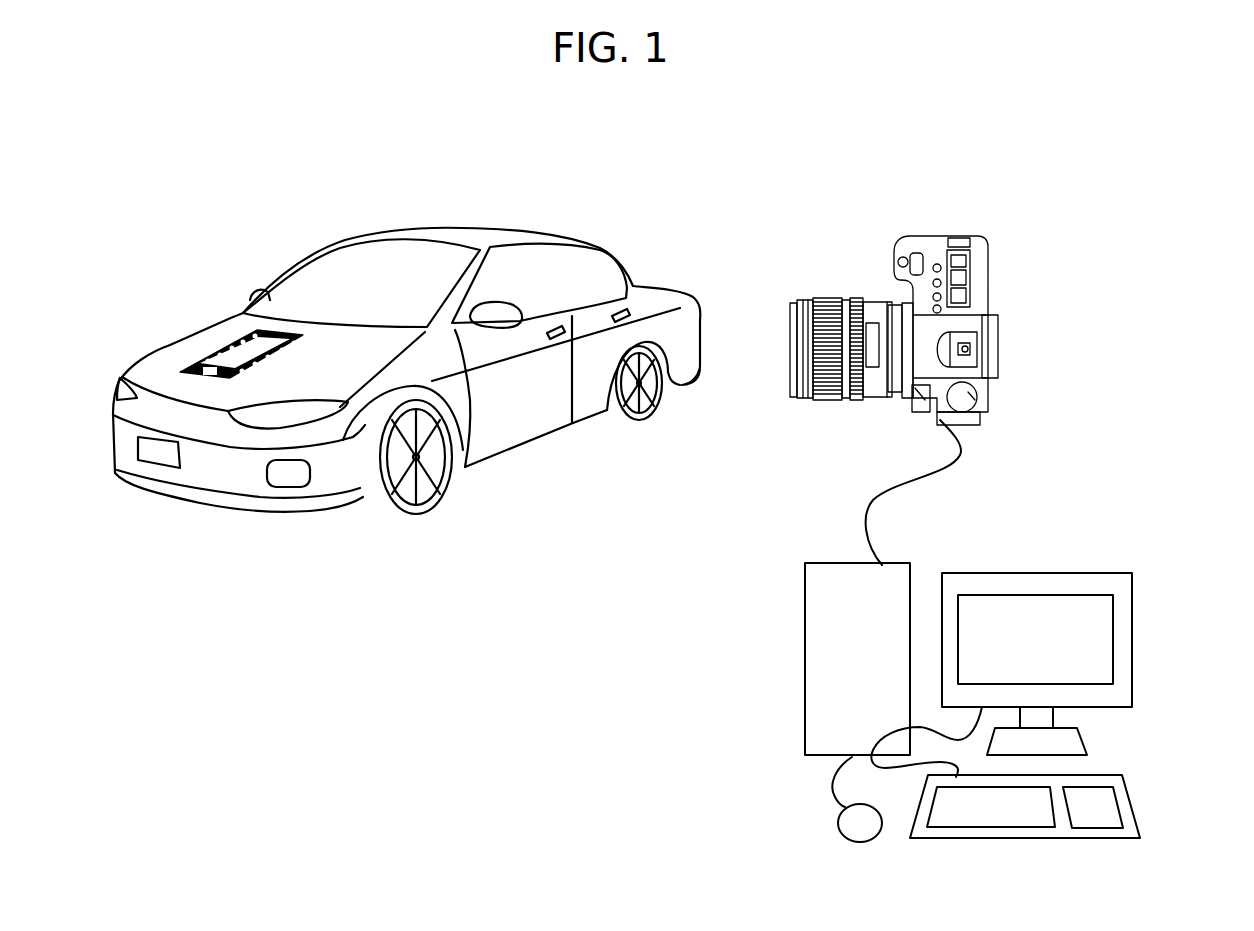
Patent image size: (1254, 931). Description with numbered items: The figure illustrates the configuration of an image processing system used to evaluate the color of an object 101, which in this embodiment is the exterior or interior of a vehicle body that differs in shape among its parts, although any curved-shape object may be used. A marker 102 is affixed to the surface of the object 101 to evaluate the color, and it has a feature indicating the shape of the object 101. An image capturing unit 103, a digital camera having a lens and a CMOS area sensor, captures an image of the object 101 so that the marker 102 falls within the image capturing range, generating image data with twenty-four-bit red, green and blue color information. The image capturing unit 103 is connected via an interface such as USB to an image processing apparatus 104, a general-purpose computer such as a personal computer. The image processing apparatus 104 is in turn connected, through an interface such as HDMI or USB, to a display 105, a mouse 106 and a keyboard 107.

The object 101 is at (463, 228).
The marker 102 is at (235, 337).
The image capturing unit 103 is at (932, 236).
The image processing apparatus 104 is at (805, 586).
The display 105 is at (1065, 573).
The mouse 106 is at (838, 823).
The keyboard 107 is at (1130, 795).